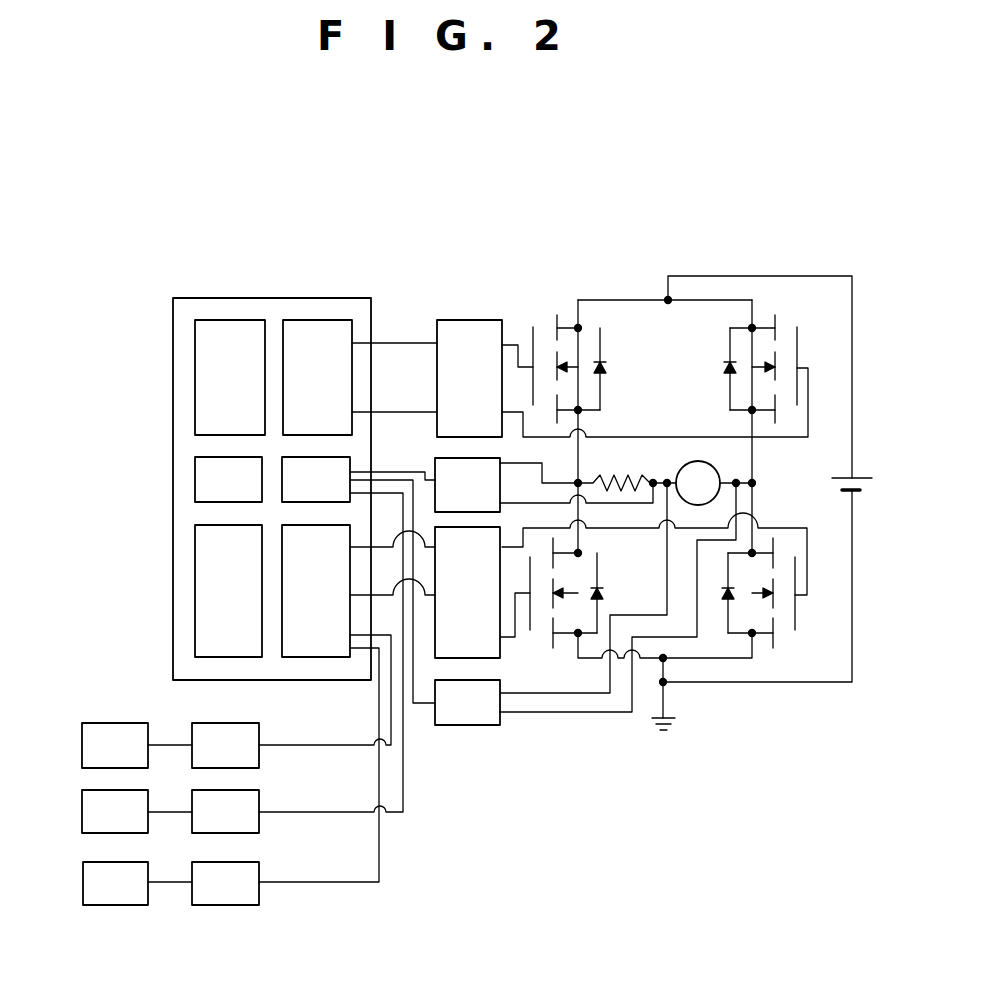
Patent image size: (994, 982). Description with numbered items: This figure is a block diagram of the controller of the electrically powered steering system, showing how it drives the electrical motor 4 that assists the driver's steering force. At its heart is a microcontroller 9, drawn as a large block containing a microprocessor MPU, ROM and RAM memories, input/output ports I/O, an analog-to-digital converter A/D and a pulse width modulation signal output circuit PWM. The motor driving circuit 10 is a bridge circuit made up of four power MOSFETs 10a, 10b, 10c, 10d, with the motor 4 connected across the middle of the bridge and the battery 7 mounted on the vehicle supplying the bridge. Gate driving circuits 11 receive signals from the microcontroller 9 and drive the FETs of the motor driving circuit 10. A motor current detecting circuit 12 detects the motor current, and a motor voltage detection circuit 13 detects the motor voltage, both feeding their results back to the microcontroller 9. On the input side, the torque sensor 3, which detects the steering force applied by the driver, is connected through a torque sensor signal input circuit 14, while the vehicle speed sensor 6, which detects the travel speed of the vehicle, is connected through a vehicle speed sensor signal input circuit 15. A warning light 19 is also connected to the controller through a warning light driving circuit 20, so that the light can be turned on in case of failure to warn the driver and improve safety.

The microcontroller 9 is at (362, 308).
The motor driving circuit 10 is at (698, 310).
The power MOSFET 10a is at (575, 357).
The power MOSFET 10b is at (738, 360).
The power MOSFET 10c is at (583, 588).
The power MOSFET 10d is at (778, 640).
The gate driving circuit 11 is at (483, 335).
The motor current detecting circuit 12 is at (447, 467).
The motor voltage detection circuit 13 is at (457, 713).
The electrical motor 4 is at (698, 460).
The battery 7 is at (856, 477).
The vehicle speed sensor 6 is at (115, 742).
The vehicle speed sensor signal input circuit 15 is at (248, 736).
The torque sensor 3 is at (92, 820).
The torque sensor signal input circuit 14 is at (243, 818).
The warning light 19 is at (108, 890).
The warning light driving circuit 20 is at (243, 890).